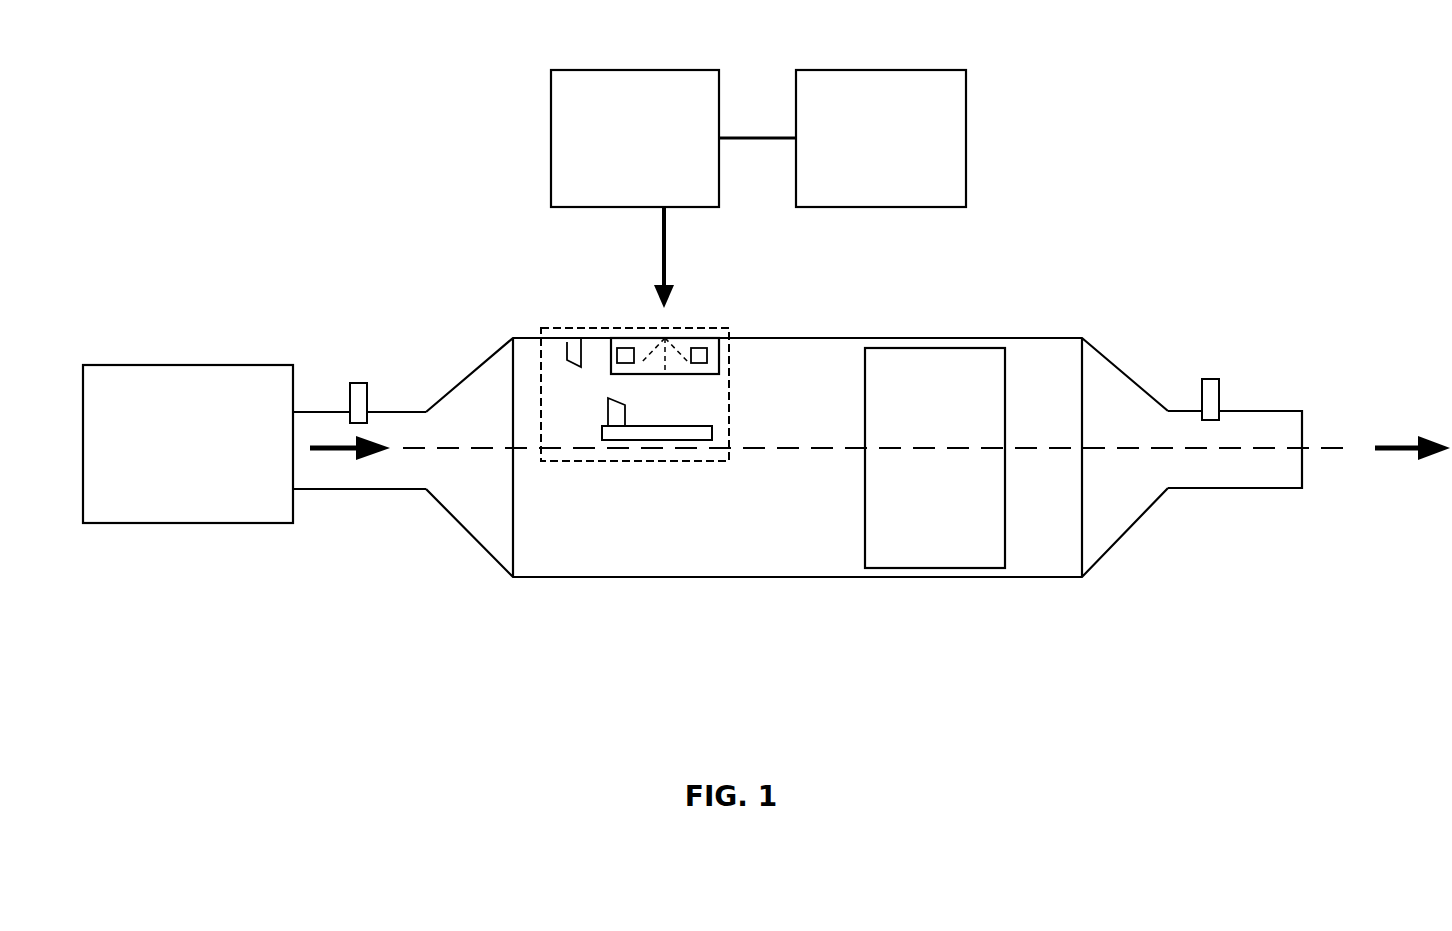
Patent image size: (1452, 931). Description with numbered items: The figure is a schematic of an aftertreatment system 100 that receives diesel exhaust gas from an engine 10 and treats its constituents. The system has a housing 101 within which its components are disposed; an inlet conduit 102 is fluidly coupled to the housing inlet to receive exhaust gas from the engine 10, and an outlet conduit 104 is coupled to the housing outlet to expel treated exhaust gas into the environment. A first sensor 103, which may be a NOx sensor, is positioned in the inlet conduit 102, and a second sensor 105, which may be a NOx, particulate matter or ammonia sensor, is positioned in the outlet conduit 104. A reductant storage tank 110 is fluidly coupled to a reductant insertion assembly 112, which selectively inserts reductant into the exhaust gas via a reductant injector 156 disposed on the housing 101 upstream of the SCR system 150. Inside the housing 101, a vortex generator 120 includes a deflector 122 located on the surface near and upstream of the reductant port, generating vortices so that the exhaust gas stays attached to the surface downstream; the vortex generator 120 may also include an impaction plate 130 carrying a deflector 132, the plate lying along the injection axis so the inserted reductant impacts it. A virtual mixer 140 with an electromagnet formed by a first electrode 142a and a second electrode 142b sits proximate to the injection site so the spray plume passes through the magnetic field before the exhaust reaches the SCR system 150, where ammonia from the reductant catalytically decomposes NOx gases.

The engine 10 is at (188, 444).
The aftertreatment system 100 is at (1100, 128).
The housing 101 is at (790, 578).
The inlet conduit 102 is at (410, 472).
The first sensor 103 is at (357, 398).
The outlet conduit 104 is at (1243, 473).
The second sensor 105 is at (1220, 398).
The reductant storage tank 110 is at (842, 138).
The reductant insertion assembly 112 is at (635, 189).
The vortex generator 120 is at (530, 327).
The deflector 122 is at (577, 343).
The impaction plate 130 is at (663, 440).
The deflector 132 is at (615, 410).
The virtual mixer 140 is at (732, 384).
The first electrode 142a is at (628, 353).
The second electrode 142b is at (707, 345).
The SCR system 150 is at (933, 535).
The reductant injector 156 is at (668, 327).